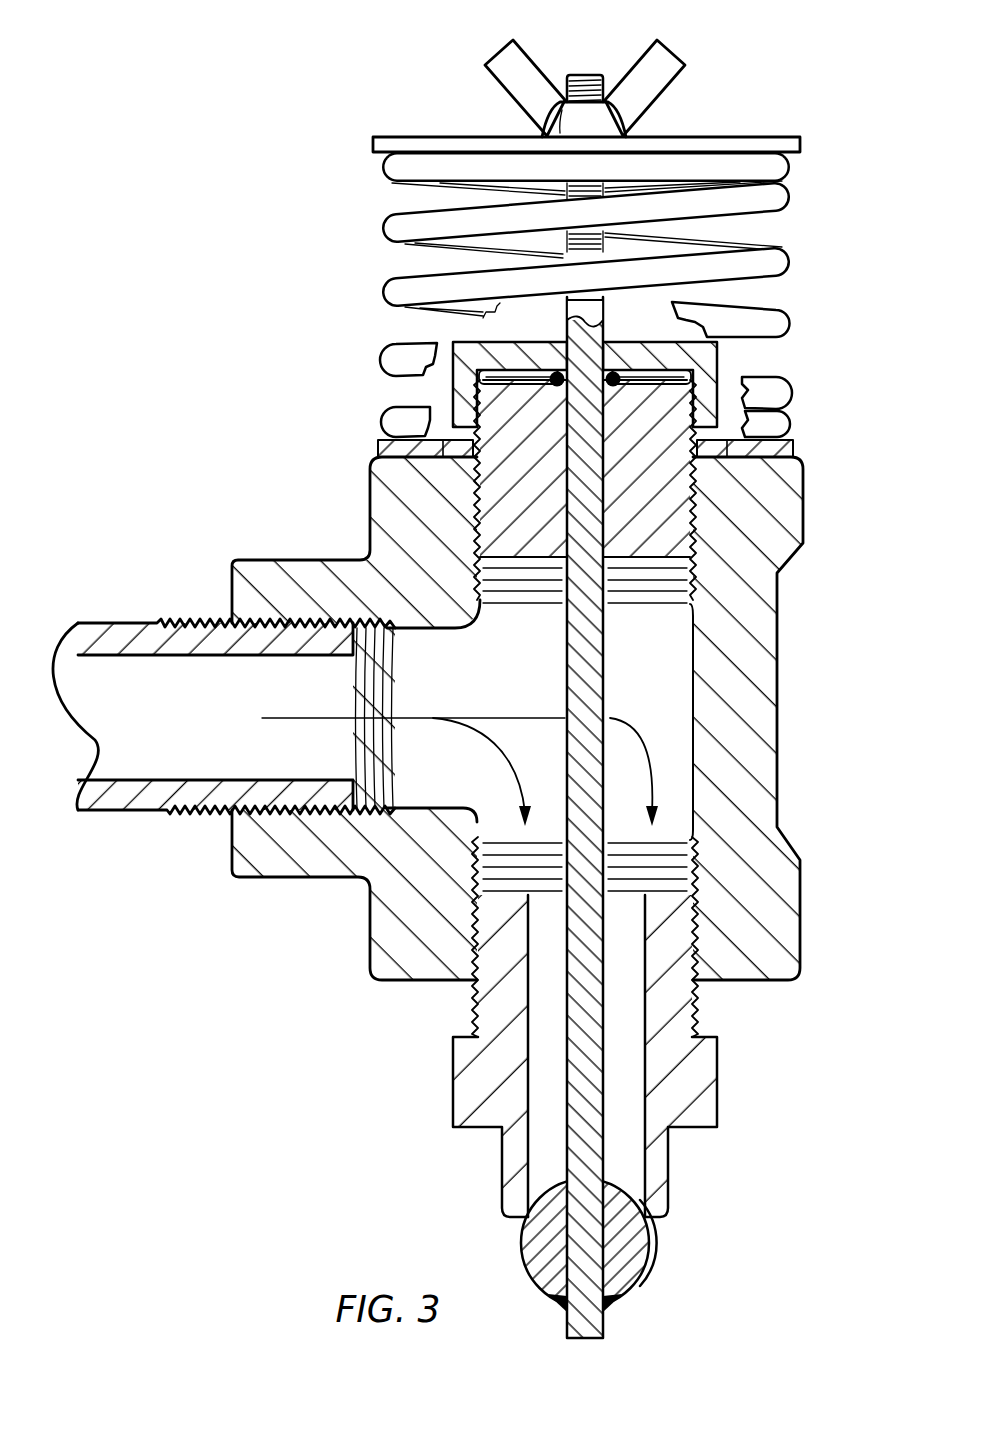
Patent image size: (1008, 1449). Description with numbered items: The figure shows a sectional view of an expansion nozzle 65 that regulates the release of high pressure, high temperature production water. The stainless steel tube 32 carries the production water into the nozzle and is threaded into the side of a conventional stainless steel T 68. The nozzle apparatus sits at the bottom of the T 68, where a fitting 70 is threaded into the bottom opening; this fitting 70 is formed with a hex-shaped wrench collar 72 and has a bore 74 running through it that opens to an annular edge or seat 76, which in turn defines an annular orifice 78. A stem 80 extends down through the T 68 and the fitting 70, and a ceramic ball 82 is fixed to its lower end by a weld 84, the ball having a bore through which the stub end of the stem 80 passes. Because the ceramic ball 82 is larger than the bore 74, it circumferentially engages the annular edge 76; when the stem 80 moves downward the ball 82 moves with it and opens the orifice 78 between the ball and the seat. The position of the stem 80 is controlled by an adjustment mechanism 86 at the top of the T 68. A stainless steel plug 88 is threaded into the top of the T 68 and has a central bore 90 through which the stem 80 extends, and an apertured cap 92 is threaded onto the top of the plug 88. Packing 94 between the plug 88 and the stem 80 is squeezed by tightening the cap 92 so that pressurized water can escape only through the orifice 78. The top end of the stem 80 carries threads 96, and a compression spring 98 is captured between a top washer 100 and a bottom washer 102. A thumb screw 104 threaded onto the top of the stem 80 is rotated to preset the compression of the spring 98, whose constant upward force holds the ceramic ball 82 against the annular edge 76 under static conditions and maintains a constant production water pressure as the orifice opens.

The expansion nozzle 65 is at (311, 88).
The stainless steel tube 32 is at (135, 623).
The stainless steel T 68 is at (778, 727).
The fitting 70 is at (698, 1012).
The hex-shaped wrench collar 72 is at (718, 1085).
The bore 74 is at (644, 1113).
The annular edge or seat 76 is at (650, 1220).
The annular orifice 78 is at (519, 1222).
The stem 80 is at (577, 1152).
The ceramic ball 82 is at (648, 1264).
The weld 84 is at (560, 1312).
The adjustment mechanism 86 is at (788, 297).
The stainless steel plug 88 is at (490, 507).
The bore 90 is at (567, 452).
The apertured cap 92 is at (717, 368).
The packing 94 is at (624, 342).
The threads 96 is at (565, 232).
The compression spring 98 is at (793, 199).
The top washer 100 is at (730, 137).
The bottom washer 102 is at (793, 440).
The thumb screw 104 is at (673, 54).